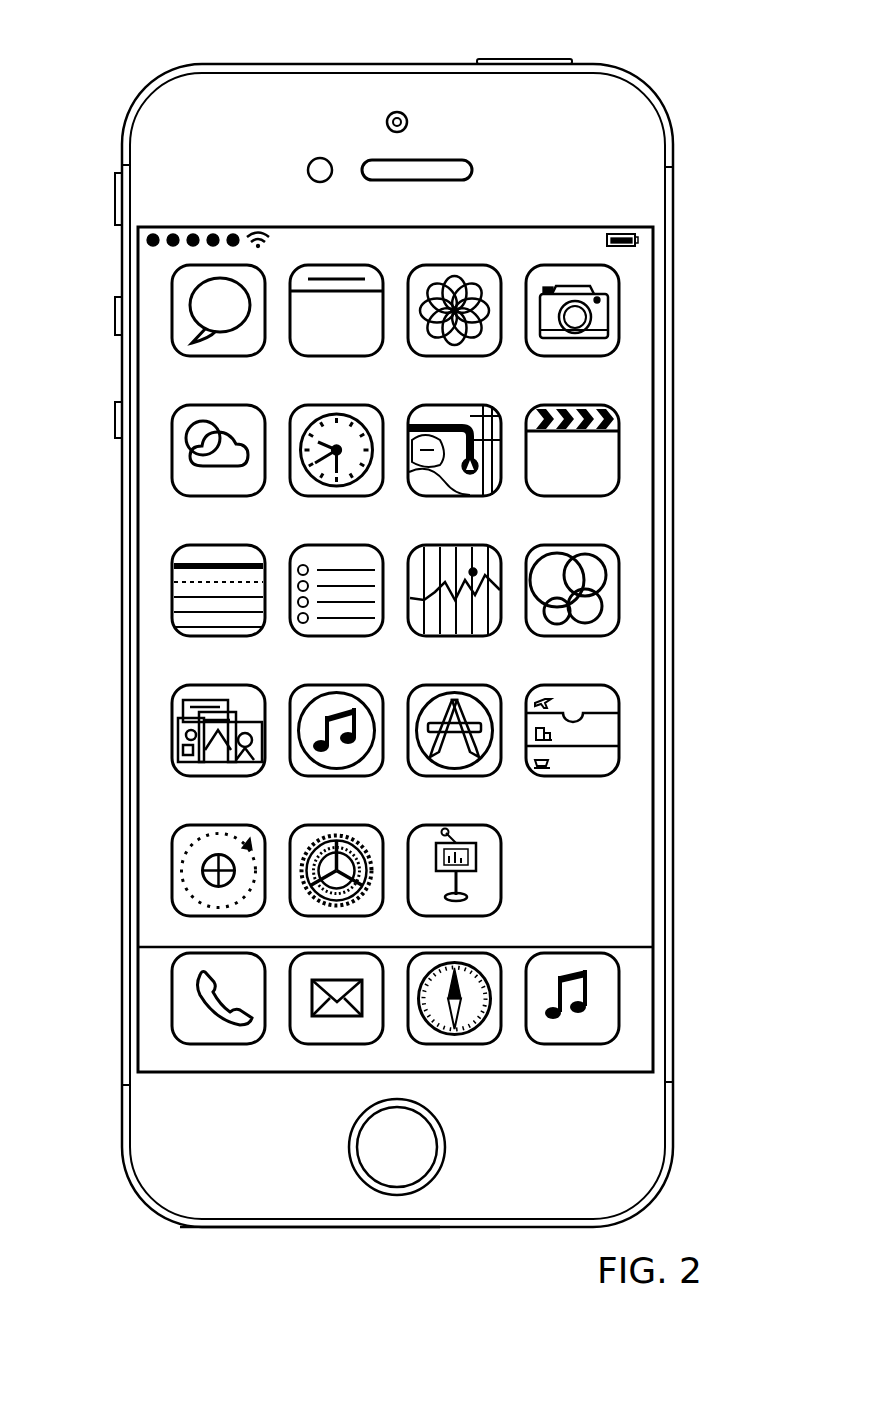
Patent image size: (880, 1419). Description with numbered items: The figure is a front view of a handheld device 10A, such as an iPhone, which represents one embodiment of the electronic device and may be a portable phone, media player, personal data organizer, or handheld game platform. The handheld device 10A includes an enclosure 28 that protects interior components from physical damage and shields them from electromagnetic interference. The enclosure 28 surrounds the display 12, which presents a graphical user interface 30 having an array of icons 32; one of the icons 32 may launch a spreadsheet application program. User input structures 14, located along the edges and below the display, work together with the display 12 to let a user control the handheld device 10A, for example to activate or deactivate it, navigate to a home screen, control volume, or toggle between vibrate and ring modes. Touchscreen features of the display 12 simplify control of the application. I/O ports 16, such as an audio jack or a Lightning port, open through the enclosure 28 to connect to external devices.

The handheld device 10A is at (130, 50).
The display 12 is at (655, 572).
The user input structures 14 is at (543, 62).
The I/O ports 16 is at (205, 1229).
The enclosure 28 is at (675, 182).
The graphical user interface 30 is at (631, 381).
The icons 32 is at (502, 875).